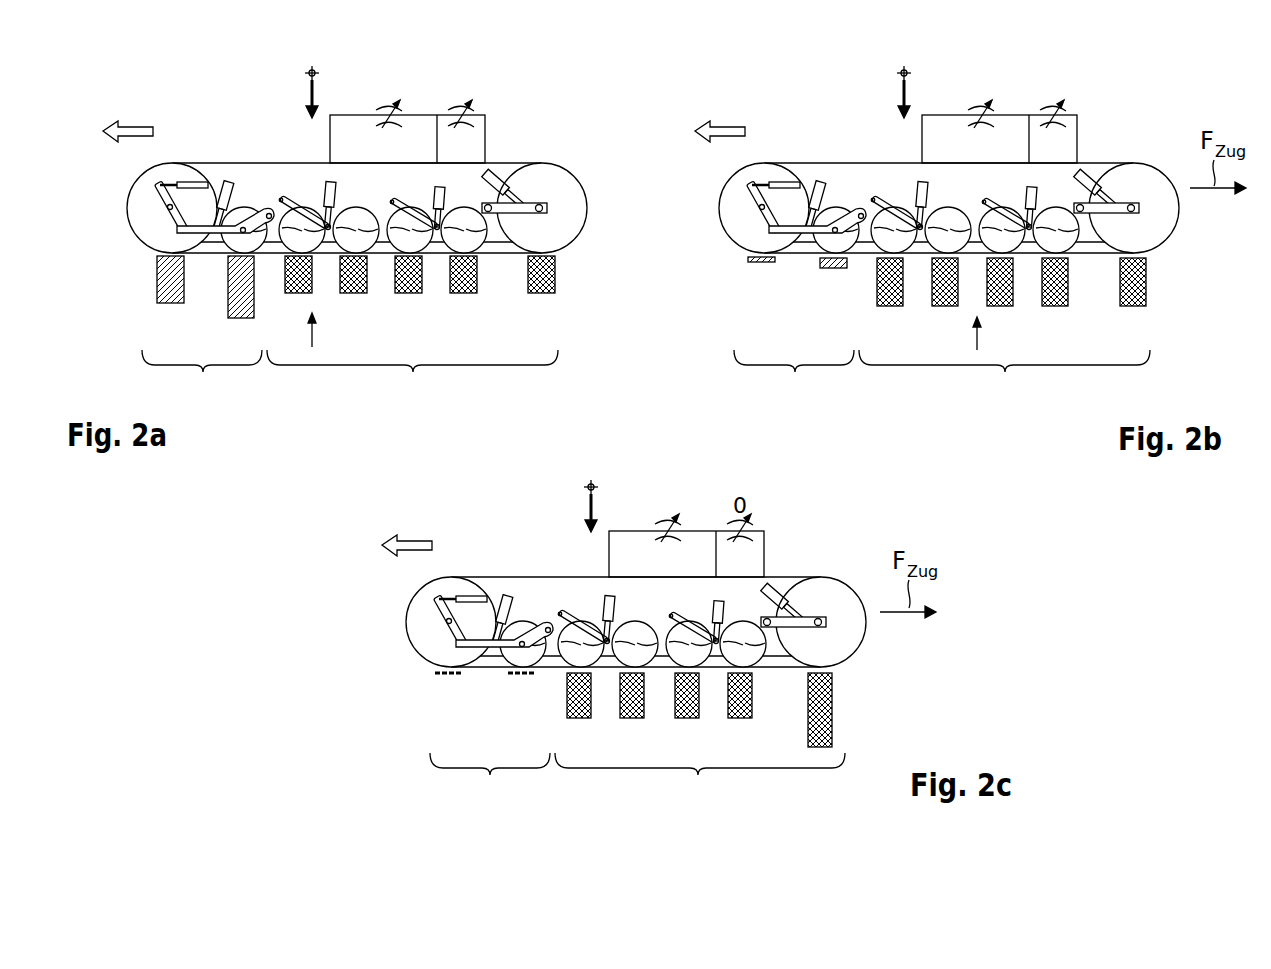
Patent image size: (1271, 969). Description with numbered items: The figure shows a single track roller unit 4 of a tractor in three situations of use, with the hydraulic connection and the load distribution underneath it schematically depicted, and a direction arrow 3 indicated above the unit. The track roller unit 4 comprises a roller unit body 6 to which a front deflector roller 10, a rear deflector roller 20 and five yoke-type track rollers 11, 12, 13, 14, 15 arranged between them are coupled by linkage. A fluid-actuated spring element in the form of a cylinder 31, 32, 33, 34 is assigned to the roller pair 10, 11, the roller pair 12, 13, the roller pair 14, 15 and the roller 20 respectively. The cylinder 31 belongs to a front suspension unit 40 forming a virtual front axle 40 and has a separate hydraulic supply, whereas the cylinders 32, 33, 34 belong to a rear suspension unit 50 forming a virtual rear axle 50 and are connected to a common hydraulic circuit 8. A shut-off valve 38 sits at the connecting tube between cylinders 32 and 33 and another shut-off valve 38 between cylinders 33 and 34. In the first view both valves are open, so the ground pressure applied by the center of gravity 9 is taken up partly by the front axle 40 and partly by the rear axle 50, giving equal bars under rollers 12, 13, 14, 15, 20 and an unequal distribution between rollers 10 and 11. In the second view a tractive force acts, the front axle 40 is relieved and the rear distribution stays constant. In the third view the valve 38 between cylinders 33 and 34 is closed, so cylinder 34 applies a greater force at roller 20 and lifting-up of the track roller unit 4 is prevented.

In FIG. 2A, the conveying direction 3 is at (136, 128).
In FIG. 2B, the conveying direction 3 is at (720, 106).
In FIG. 2C, the conveying direction 3 is at (407, 521).
In FIG. 2A, the track roller unit 4 is at (563, 148).
In FIG. 2B, the track roller unit 4 is at (984, 171).
In FIG. 2C, the track roller unit 4 is at (670, 591).
In FIG. 2A, the roller unit body 6 is at (352, 194).
In FIG. 2B, the roller unit body 6 is at (949, 206).
In FIG. 2C, the roller unit body 6 is at (636, 622).
In FIG. 2A, the hydraulic circuit 8 is at (425, 112).
In FIG. 2B, the hydraulic circuit 8 is at (999, 108).
In FIG. 2C, the hydraulic circuit 8 is at (686, 523).
In FIG. 2A, the center of gravity 9 is at (306, 70).
In FIG. 2B, the center of gravity 9 is at (878, 80).
In FIG. 2C, the center of gravity 9 is at (565, 495).
In FIG. 2A, the front deflector roller 10 is at (142, 203).
In FIG. 2B, the front deflector roller 10 is at (737, 208).
In FIG. 2C, the front deflector roller 10 is at (425, 622).
In FIG. 2A, the yoke-type track roller 11 is at (253, 242).
In FIG. 2B, the yoke-type track roller 11 is at (824, 268).
In FIG. 2C, the yoke-type track roller 11 is at (514, 675).
In FIG. 2A, the yoke-type track roller 12 is at (310, 240).
In FIG. 2B, the yoke-type track roller 12 is at (901, 274).
In FIG. 2C, the yoke-type track roller 12 is at (588, 686).
In FIG. 2A, the yoke-type track roller 13 is at (364, 240).
In FIG. 2B, the yoke-type track roller 13 is at (956, 256).
In FIG. 2C, the yoke-type track roller 13 is at (643, 686).
In FIG. 2A, the yoke-type track roller 14 is at (418, 240).
In FIG. 2B, the yoke-type track roller 14 is at (1010, 275).
In FIG. 2C, the yoke-type track roller 14 is at (697, 686).
In FIG. 2A, the yoke-type track roller 15 is at (474, 240).
In FIG. 2B, the yoke-type track roller 15 is at (1065, 275).
In FIG. 2C, the yoke-type track roller 15 is at (753, 686).
In FIG. 2A, the rear deflector roller 20 is at (563, 232).
In FIG. 2B, the rear deflector roller 20 is at (1147, 223).
In FIG. 2C, the rear deflector roller 20 is at (837, 635).
In FIG. 2A, the cylinder 31 is at (222, 192).
In FIG. 2B, the cylinder 31 is at (806, 178).
In FIG. 2C, the cylinder 31 is at (493, 592).
In FIG. 2A, the cylinder 32 is at (323, 195).
In FIG. 2B, the cylinder 32 is at (890, 176).
In FIG. 2C, the cylinder 32 is at (577, 590).
In FIG. 2A, the cylinder 33 is at (428, 195).
In FIG. 2B, the cylinder 33 is at (1001, 182).
In FIG. 2C, the cylinder 33 is at (688, 597).
In FIG. 2A, the cylinder 34 is at (495, 175).
In FIG. 2B, the cylinder 34 is at (1106, 157).
In FIG. 2C, the cylinder 34 is at (793, 572).
In FIG. 2A, the shut-off valve 38 is at (385, 100).
In FIG. 2B, the shut-off valve 38 is at (1017, 84).
In FIG. 2C, the shut-off valve 38 is at (719, 497).
In FIG. 2A, the front suspension unit 40 is at (202, 378).
In FIG. 2B, the front suspension unit 40 is at (794, 378).
In FIG. 2C, the front suspension unit 40 is at (490, 781).
In FIG. 2A, the rear suspension unit 50 is at (412, 378).
In FIG. 2B, the rear suspension unit 50 is at (1004, 378).
In FIG. 2C, the rear suspension unit 50 is at (700, 781).